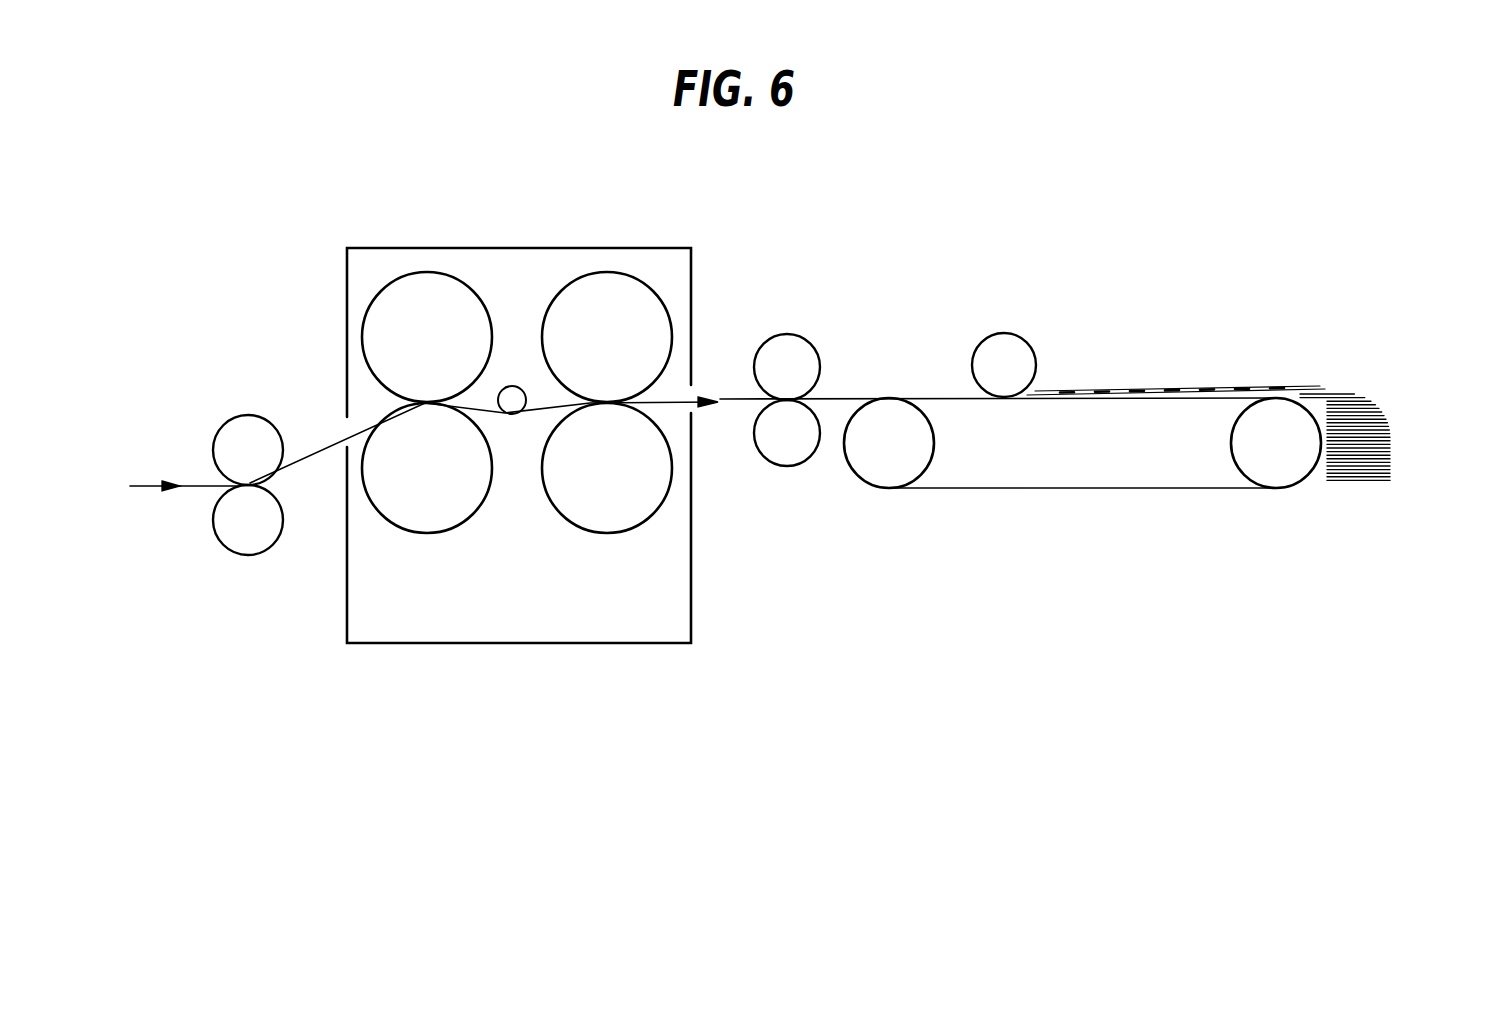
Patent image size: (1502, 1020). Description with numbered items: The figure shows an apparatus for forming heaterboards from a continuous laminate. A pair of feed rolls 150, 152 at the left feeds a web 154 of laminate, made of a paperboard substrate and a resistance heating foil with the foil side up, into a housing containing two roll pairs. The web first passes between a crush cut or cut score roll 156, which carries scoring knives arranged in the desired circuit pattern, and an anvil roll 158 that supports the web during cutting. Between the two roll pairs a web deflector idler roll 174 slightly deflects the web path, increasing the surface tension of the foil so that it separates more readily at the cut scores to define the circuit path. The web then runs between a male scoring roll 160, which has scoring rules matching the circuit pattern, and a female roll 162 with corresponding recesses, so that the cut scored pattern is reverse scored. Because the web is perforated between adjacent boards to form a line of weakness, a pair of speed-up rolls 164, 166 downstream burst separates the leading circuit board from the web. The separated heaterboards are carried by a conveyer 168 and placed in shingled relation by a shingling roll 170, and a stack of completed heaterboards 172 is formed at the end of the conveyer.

The feed roll 150 is at (232, 540).
The feed roll 152 is at (230, 430).
The web 154 is at (333, 442).
The cut score roll 156 is at (455, 292).
The anvil roll 158 is at (390, 505).
The male scoring roll 160 is at (647, 505).
The female roll 162 is at (630, 292).
The speed-up roll 164 is at (811, 370).
The speed-up roll 166 is at (797, 450).
The conveyer 168 is at (1210, 490).
The shingling roll 170 is at (1025, 362).
The stack of completed heaterboards 172 is at (1402, 428).
The web deflector idler roll 174 is at (514, 412).